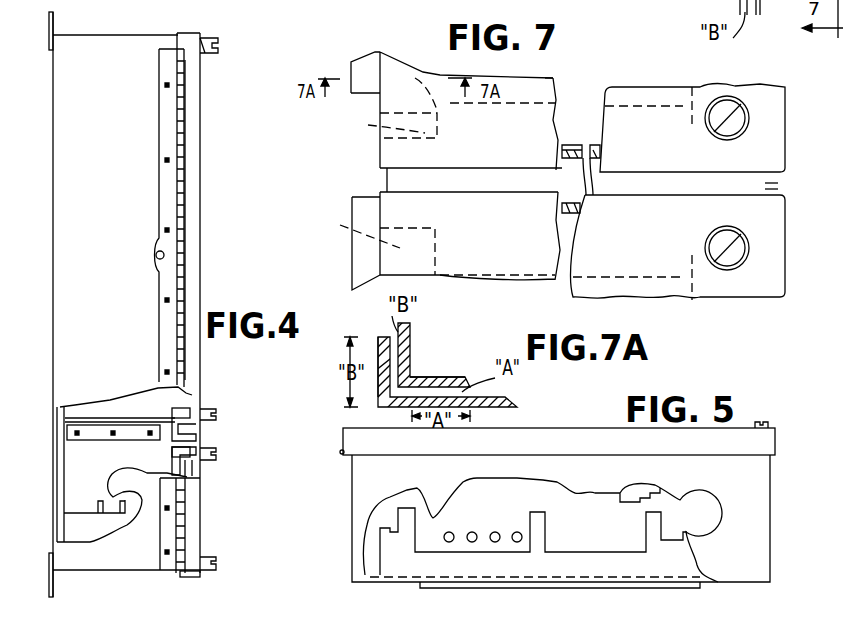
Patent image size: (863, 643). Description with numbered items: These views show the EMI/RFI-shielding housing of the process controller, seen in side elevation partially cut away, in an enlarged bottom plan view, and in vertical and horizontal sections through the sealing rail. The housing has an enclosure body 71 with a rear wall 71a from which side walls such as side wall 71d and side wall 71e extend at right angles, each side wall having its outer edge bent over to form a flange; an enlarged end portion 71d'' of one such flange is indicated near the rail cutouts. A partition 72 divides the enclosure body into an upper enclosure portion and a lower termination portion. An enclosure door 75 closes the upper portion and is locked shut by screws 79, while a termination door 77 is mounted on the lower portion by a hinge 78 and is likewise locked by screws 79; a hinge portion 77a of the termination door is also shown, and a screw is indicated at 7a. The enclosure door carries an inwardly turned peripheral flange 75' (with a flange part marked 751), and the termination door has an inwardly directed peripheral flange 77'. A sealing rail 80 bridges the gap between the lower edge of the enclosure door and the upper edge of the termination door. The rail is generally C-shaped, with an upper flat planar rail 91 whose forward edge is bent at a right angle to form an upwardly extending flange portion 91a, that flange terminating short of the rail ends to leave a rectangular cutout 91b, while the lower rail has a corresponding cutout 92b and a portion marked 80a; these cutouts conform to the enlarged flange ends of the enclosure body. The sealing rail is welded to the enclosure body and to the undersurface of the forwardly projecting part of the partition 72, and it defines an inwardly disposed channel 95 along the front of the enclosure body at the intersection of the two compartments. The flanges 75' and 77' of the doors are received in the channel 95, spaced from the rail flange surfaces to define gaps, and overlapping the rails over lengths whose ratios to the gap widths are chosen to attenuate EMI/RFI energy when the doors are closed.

In FIG. 7, the screw 7a is at (741, 118).
In FIG. 4, the enclosure body 71 is at (58, 485).
In FIG. 7A, the enclosure body 71 is at (410, 352).
In FIG. 4, the rear wall 71a is at (53, 221).
In FIG. 5, the rear wall 71a is at (358, 587).
In FIG. 7A, the side wall 71d is at (442, 363).
In FIG. 5, the side wall 71d is at (496, 535).
In FIG. 7, the frame leg portion 71d'' is at (368, 180).
In FIG. 5, the side wall 71e is at (788, 505).
In FIG. 4, the partition 72 is at (60, 405).
In FIG. 5, the partition 72 is at (595, 545).
In FIG. 4, the enclosure door 75 is at (193, 303).
In FIG. 7, the enclosure door 75 is at (711, 128).
In FIG. 7A, the enclosure door 75 is at (480, 379).
In FIG. 4, the flange 75' is at (215, 220).
In FIG. 7, the flange 75' is at (797, 167).
In FIG. 7A, the cover panel flange 751 is at (378, 350).
In FIG. 4, the termination door 77 is at (201, 525).
In FIG. 4, the housing hinge portion 77a is at (210, 462).
In FIG. 7, the housing hinge portion 77a is at (728, 268).
In FIG. 4, the peripheral flange 77' is at (207, 590).
In FIG. 7, the peripheral flange 77' is at (708, 209).
In FIG. 5, the peripheral flange 77' is at (581, 438).
In FIG. 5, the hinge 78 is at (350, 468).
In FIG. 4, the screws 79 is at (217, 44).
In FIG. 7, the screws 79 is at (780, 262).
In FIG. 4, the sealing rail 80 is at (200, 425).
In FIG. 7, the sealing rail 80 is at (778, 186).
In FIG. 7, the hinge strip portion 80a is at (467, 251).
In FIG. 7, the upper rail 91 is at (566, 145).
In FIG. 7, the upwardly extending flange portion 91a is at (540, 125).
In FIG. 7, the cutout 91b is at (467, 109).
In FIG. 7, the cutout 92b is at (456, 241).
In FIG. 7, the channel 95 is at (454, 122).